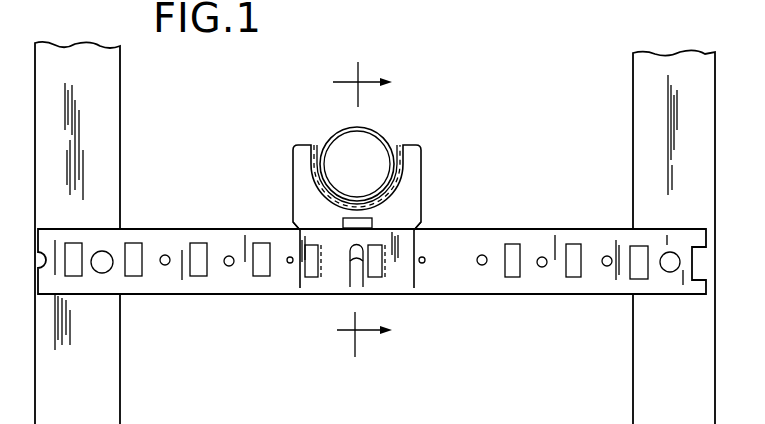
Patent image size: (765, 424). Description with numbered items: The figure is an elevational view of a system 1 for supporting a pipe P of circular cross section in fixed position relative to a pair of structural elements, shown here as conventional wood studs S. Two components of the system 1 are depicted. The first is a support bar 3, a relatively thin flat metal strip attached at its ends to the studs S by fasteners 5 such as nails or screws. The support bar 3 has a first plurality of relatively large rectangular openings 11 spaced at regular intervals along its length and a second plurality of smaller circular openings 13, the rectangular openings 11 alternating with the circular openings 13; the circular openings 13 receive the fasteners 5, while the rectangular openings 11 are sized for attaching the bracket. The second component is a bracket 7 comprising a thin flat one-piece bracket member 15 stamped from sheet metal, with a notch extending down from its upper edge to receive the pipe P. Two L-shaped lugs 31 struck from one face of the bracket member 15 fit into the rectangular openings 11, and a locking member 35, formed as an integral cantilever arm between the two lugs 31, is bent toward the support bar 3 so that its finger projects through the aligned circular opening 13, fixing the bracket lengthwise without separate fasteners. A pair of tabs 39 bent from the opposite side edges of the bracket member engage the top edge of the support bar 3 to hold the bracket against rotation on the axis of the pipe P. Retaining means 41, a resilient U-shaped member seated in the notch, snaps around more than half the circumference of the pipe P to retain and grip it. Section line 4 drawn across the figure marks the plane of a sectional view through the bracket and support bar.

The system 1 is at (372, 202).
The support bar 3 is at (372, 253).
The section line 4- 4 is at (362, 209).
The fasteners 5 is at (102, 272).
The bracket 7 is at (364, 181).
The rectangular openings 11 is at (133, 260).
The circular openings 13 is at (229, 266).
The bracket member 15 is at (300, 157).
The L-shaped lugs 31 is at (312, 267).
The locking member 35 is at (355, 280).
The tabs 39 is at (293, 222).
The means for retaining the pipe 41 is at (318, 135).
The pipe P is at (386, 131).
The studs S is at (120, 148).